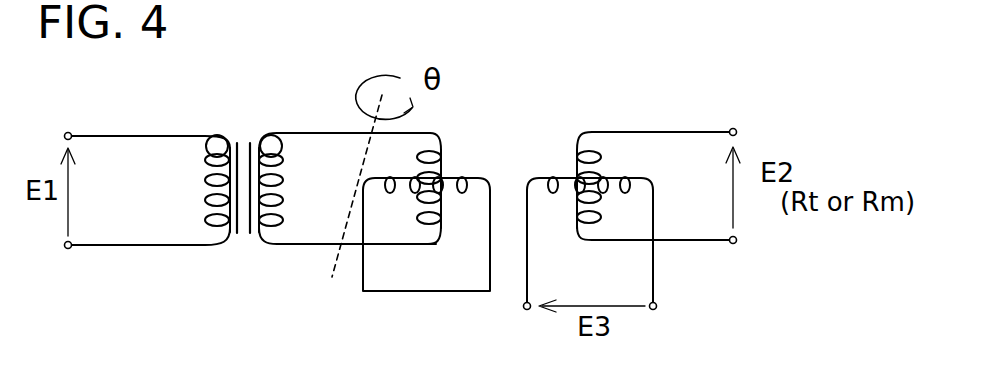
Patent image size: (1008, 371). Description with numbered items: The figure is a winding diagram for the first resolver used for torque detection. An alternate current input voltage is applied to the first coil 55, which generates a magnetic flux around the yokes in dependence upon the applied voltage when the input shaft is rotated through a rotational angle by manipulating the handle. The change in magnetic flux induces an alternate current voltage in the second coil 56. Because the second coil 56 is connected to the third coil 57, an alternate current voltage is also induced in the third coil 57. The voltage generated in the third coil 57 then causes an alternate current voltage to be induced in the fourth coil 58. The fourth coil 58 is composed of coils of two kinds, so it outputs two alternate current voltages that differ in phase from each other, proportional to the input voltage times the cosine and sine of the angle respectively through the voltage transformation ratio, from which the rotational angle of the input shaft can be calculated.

The first coil 55 is at (212, 133).
The second coil 56 is at (276, 132).
The third coil 57 is at (450, 177).
The fourth coil 58 is at (574, 134).